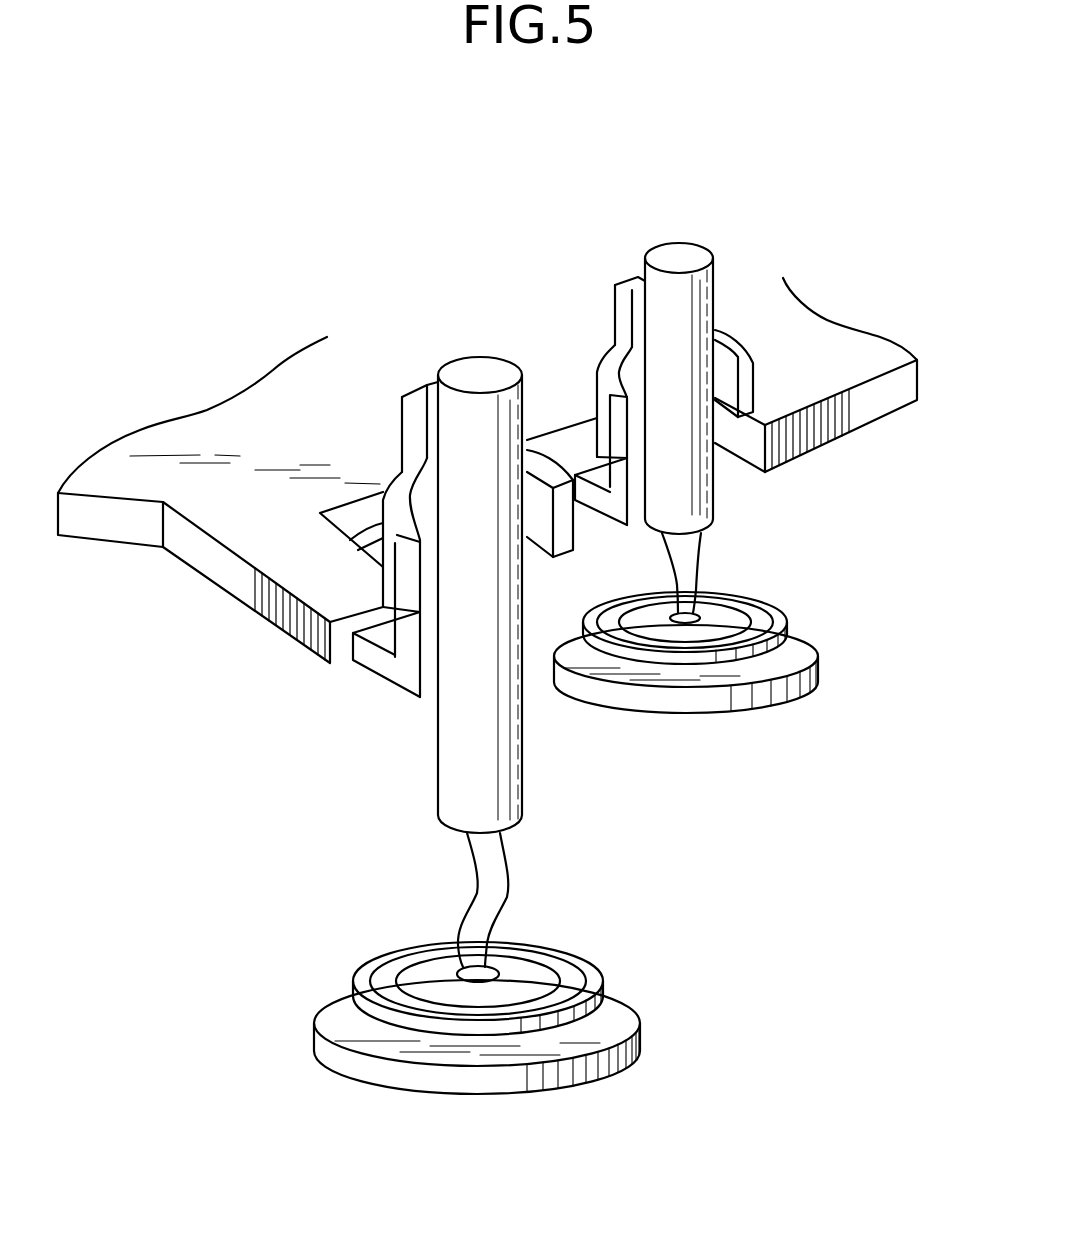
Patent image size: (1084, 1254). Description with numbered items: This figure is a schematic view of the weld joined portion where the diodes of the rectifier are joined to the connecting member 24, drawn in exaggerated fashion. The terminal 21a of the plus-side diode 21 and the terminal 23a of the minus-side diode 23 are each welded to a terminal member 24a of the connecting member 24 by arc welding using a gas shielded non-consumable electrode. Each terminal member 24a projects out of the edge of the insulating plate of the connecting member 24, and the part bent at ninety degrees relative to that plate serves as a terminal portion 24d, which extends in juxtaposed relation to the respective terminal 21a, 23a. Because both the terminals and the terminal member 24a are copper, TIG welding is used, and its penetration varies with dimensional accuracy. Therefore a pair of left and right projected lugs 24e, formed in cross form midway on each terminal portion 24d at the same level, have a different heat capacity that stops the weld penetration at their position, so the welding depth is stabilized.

The plus-side diode 21 is at (765, 604).
The terminal 21a is at (713, 290).
The minus-side diode 23 is at (597, 962).
The terminal 23a is at (463, 453).
The connecting member 24 is at (872, 363).
The terminal member 24a is at (375, 660).
The terminal portion 24d is at (408, 428).
The projected lugs 24e is at (350, 540).